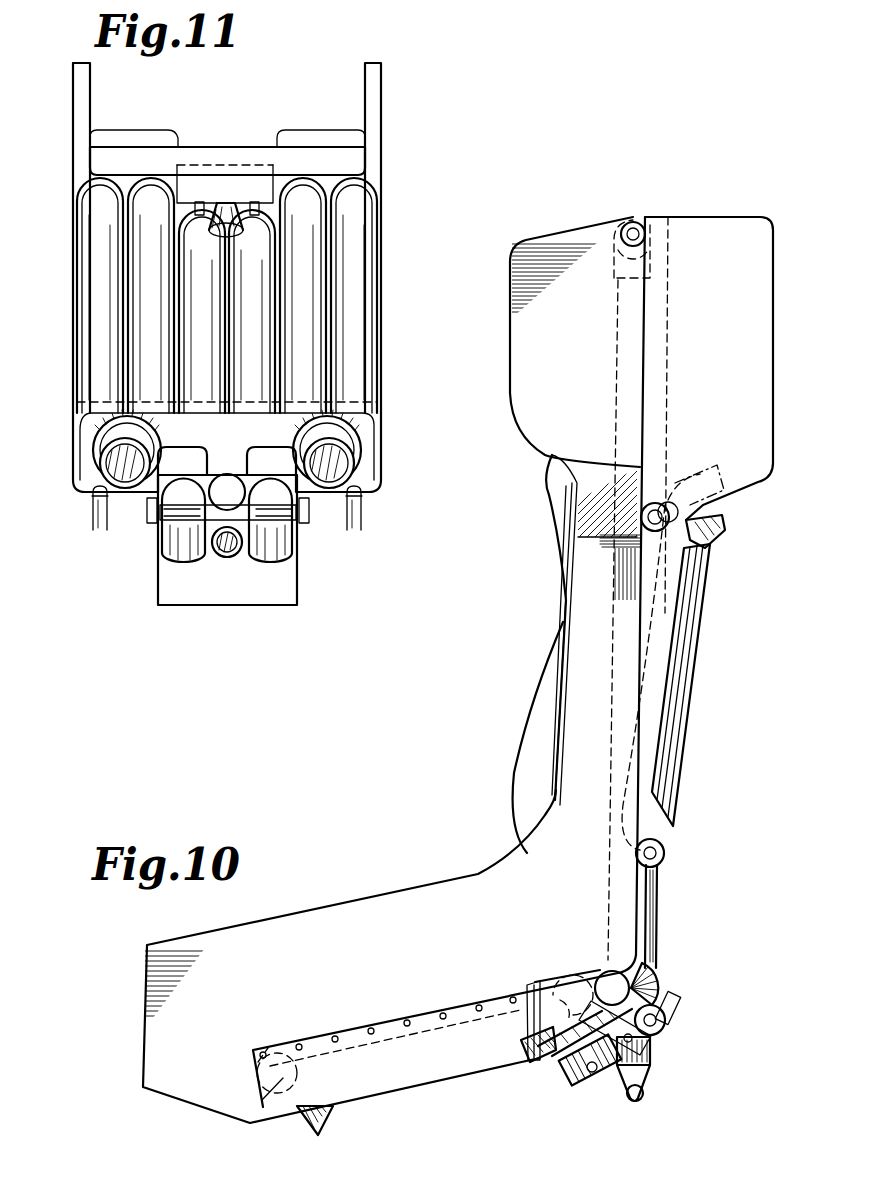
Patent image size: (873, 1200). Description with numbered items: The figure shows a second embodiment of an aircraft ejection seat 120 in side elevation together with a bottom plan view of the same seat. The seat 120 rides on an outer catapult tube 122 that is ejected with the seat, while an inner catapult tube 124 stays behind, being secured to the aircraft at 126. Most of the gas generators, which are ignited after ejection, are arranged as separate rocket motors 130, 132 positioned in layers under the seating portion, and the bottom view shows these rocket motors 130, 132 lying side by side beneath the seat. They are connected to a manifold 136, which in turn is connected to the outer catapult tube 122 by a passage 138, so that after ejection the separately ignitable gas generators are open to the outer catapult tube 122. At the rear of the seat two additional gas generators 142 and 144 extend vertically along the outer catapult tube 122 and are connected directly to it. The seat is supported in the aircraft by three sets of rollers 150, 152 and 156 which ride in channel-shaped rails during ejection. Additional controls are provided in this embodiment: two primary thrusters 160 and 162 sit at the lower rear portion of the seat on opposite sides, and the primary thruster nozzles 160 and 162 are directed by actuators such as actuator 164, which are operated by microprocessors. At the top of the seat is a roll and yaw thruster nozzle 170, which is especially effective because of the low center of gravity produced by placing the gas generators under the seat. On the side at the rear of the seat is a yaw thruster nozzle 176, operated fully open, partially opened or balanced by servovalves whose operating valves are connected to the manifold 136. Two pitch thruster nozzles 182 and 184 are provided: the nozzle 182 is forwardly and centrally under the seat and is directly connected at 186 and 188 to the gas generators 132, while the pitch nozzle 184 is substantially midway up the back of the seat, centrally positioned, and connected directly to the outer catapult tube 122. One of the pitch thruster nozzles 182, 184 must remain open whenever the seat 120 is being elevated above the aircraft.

In FIG. 11, the seat 120 is at (402, 239).
In FIG. 10, the seat 120 is at (636, 219).
In FIG. 11, the outer catapult tube 122 is at (262, 545).
In FIG. 10, the outer catapult tube 122 is at (672, 365).
In FIG. 10, the inner catapult tube 124 is at (650, 1083).
In FIG. 10, the securing point 126 is at (642, 1100).
In FIG. 11, the rocket motor 130 is at (145, 330).
In FIG. 11, the rocket motor 132 is at (192, 268).
In FIG. 11, the manifold 136 is at (253, 447).
In FIG. 10, the manifold 136 is at (527, 1062).
In FIG. 11, the passage 138 is at (233, 458).
In FIG. 10, the passage 138 is at (585, 990).
In FIG. 11, the gas generator 142 is at (183, 520).
In FIG. 10, the gas generator 142 is at (690, 680).
In FIG. 11, the gas generator 144 is at (233, 505).
In FIG. 10, the roller 150 is at (657, 503).
In FIG. 10, the roller 152 is at (666, 855).
In FIG. 10, the roller 156 is at (667, 1025).
In FIG. 11, the primary thruster nozzle 160 is at (130, 470).
In FIG. 10, the primary thruster nozzle 160 is at (588, 1084).
In FIG. 11, the primary thruster nozzle 162 is at (330, 468).
In FIG. 11, the actuator 164 is at (100, 512).
In FIG. 10, the actuator 164 is at (678, 1005).
In FIG. 10, the roll and yaw thruster nozzle 170 is at (648, 218).
In FIG. 10, the yaw thruster nozzle 176 is at (652, 985).
In FIG. 11, the pitch thruster nozzle 182 is at (226, 203).
In FIG. 10, the pitch thruster nozzle 182 is at (322, 1118).
In FIG. 11, the pitch thruster nozzle 184 is at (226, 558).
In FIG. 10, the pitch thruster nozzle 184 is at (724, 528).
In FIG. 11, the connection 186 is at (254, 203).
In FIG. 11, the connection 188 is at (200, 202).
In FIG. 10, the connection 188 is at (287, 1045).